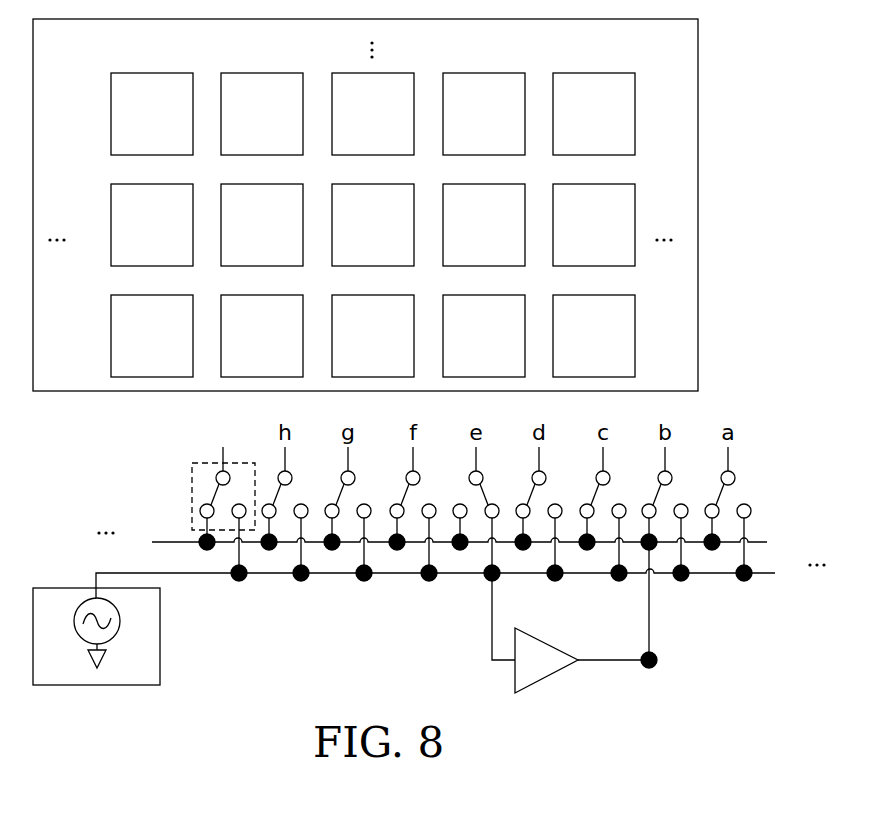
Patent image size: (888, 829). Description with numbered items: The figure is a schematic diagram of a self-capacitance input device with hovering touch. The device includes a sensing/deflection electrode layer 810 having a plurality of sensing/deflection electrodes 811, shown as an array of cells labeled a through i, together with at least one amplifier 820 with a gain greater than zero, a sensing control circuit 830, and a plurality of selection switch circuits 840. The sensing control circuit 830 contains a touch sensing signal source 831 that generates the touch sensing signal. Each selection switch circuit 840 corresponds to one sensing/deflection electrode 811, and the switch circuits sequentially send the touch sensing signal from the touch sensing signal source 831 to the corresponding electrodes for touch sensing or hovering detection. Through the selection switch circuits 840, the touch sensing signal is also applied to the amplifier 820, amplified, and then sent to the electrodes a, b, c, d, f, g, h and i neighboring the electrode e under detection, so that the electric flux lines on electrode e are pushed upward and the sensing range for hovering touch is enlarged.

The sensing/deflection electrode layer 810 is at (417, 205).
The sensing/deflection electrode 811 is at (392, 73).
The amplifier 820 is at (515, 682).
The sensing control circuit 830 is at (146, 636).
The touch sensing signal source 831 is at (120, 621).
The selection switch circuit 840 is at (192, 497).